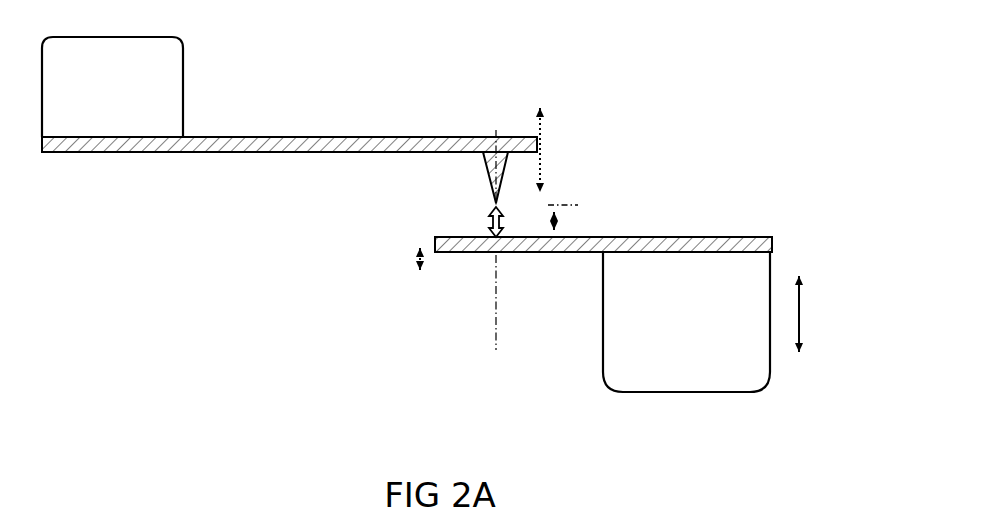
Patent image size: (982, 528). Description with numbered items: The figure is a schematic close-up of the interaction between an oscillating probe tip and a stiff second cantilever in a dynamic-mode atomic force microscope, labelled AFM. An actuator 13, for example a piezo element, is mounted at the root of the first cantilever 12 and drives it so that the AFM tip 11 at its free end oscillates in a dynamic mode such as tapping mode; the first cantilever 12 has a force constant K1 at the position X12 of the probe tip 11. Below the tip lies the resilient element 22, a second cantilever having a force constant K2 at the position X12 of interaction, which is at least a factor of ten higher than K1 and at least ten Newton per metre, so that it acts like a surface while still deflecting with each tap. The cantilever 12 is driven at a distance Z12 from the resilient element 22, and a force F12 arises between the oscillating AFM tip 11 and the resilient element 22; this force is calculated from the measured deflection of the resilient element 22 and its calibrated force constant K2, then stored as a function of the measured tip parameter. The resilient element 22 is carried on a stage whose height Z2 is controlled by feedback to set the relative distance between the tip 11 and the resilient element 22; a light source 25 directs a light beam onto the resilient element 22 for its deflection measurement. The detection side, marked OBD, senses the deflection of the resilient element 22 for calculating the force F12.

The actuator 13 is at (112, 87).
The first cantilever 12 is at (343, 116).
The AFM tip 11 is at (462, 179).
The force constant of the first cantilever K1 is at (496, 115).
The force F12 is at (488, 222).
The distance Z12 is at (560, 222).
The atomic force microscope AFM is at (660, 136).
The resilient element 22 is at (542, 279).
The light source 25 is at (686, 322).
The height of the translation stage Z2 is at (824, 314).
The optical beam deflection detector OBD is at (328, 293).
The force constant of the resilient element K2 is at (496, 268).
The position of interaction X12 is at (499, 385).